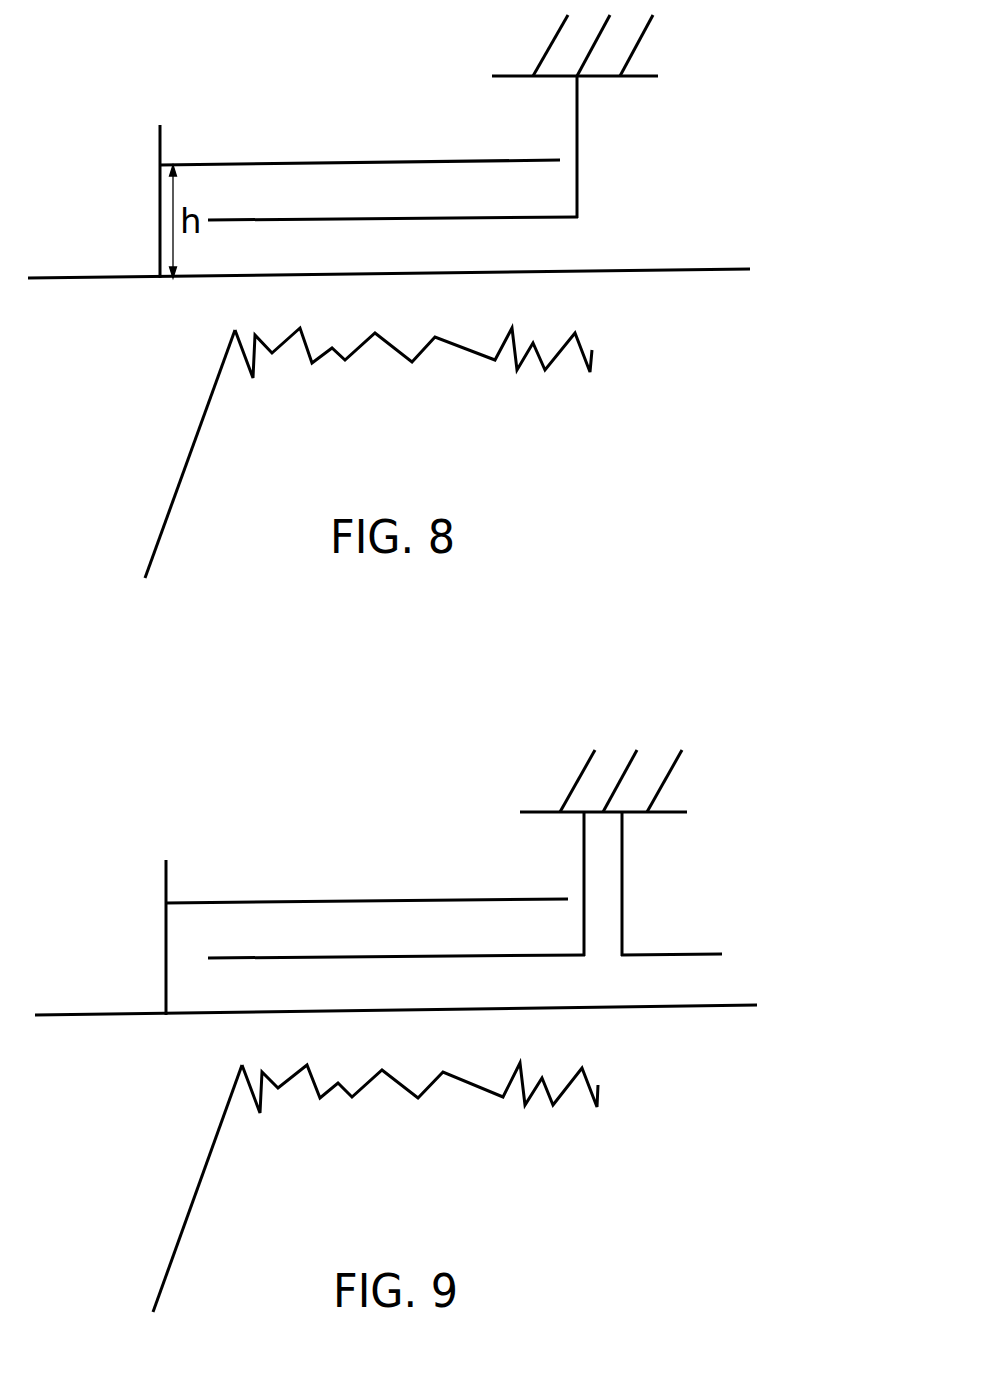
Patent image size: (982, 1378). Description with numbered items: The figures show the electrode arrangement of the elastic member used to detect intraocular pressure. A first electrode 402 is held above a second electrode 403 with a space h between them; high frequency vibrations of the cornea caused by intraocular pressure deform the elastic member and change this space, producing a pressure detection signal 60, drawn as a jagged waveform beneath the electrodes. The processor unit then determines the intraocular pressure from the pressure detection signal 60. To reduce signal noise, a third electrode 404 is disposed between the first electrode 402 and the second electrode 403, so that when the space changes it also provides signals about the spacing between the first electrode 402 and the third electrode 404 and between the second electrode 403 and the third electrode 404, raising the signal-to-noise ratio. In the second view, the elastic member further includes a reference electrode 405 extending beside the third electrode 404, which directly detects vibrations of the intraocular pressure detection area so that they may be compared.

In FIG. 8, the pressure detection signal 60 is at (560, 350).
In FIG. 9, the pressure detection signal 60 is at (568, 1087).
In FIG. 8, the first electrode 402 is at (360, 163).
In FIG. 9, the first electrode 402 is at (367, 897).
In FIG. 8, the second electrode 403 is at (224, 270).
In FIG. 9, the second electrode 403 is at (233, 1003).
In FIG. 8, the third electrode 404 is at (578, 132).
In FIG. 9, the third electrode 404 is at (470, 952).
In FIG. 9, the reference electrode 405 is at (672, 948).